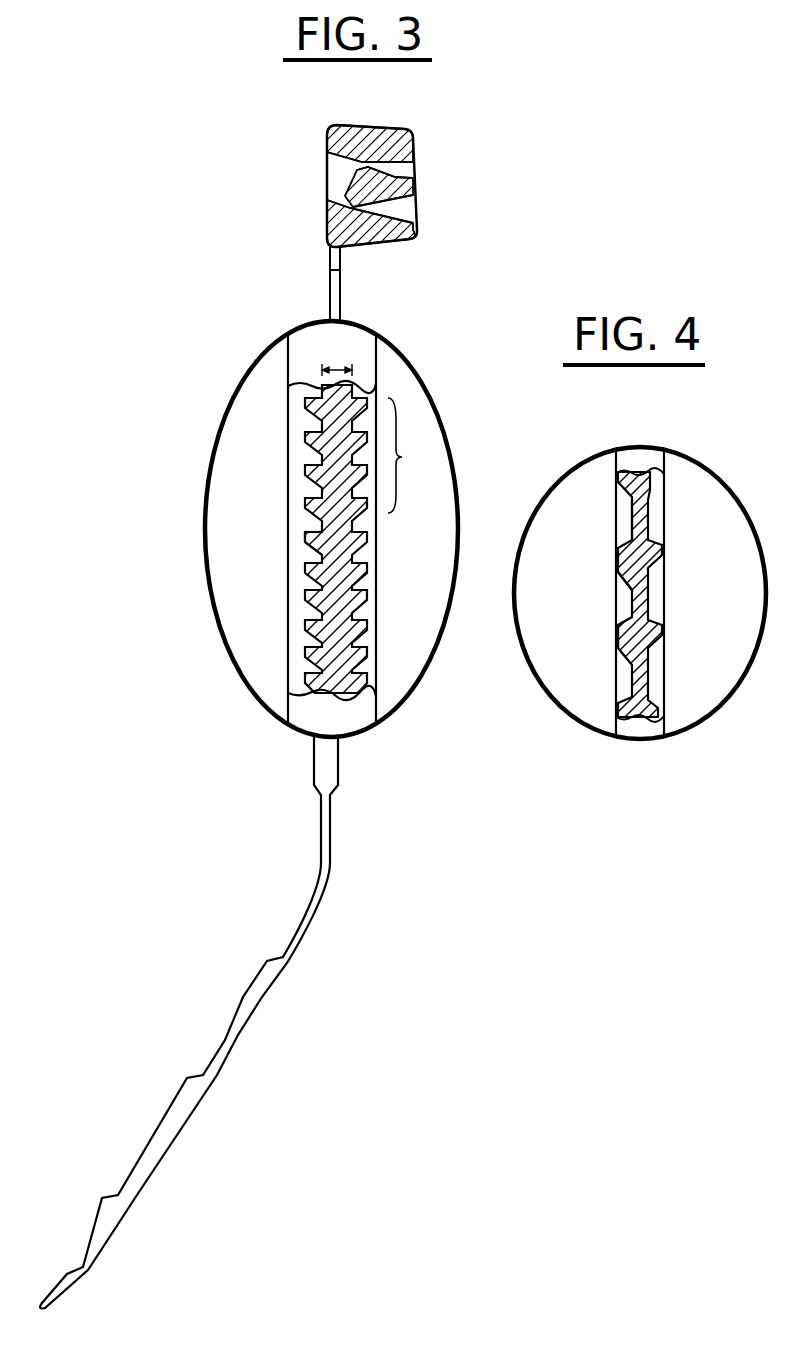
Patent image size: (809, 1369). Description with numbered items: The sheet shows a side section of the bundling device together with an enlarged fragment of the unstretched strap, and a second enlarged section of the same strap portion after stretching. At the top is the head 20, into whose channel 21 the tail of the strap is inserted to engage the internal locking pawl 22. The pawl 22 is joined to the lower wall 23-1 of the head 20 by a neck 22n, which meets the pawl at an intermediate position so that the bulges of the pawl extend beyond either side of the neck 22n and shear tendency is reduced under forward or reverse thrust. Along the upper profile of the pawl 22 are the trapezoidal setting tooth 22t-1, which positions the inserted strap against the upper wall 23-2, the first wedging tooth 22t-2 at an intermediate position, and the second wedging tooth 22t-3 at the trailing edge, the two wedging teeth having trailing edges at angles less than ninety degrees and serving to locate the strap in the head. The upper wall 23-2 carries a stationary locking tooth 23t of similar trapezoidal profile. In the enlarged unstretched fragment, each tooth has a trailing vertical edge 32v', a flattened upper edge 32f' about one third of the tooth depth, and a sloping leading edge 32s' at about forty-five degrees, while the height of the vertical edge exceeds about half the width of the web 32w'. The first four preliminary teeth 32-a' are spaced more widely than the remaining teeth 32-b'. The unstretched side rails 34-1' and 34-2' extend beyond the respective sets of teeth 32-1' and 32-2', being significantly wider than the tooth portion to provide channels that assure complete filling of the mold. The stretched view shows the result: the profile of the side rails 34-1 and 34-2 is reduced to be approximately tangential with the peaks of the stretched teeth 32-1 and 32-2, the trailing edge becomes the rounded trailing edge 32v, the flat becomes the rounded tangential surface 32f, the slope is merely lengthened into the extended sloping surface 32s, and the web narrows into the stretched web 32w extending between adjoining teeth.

In FIG. 3, the head 20 is at (383, 250).
In FIG. 3, the channel 21 is at (335, 175).
In FIG. 3, the pawl 22 is at (355, 170).
In FIG. 3, the setting tooth 22t-1 is at (368, 168).
In FIG. 3, the first wedging tooth 22t-2 is at (377, 177).
In FIG. 3, the second wedging tooth 22t-3 is at (400, 188).
In FIG. 3, the neck 22n is at (340, 208).
In FIG. 3, the locking tooth 23t is at (362, 160).
In FIG. 3, the lower wall 23-1 is at (415, 227).
In FIG. 3, the upper wall 23-2 is at (402, 142).
In FIG. 3, the web 32w' is at (337, 354).
In FIG. 3, the preliminary unstretched teeth 32-a' is at (417, 455).
In FIG. 3, the remaining teeth 32-b' is at (421, 530).
In FIG. 3, the trailing vertical edge 32v' is at (277, 518).
In FIG. 3, the flattened upper edge 32f' is at (279, 533).
In FIG. 3, the sloping leading edge 32s' is at (274, 554).
In FIG. 3, the set of teeth 32-1' is at (293, 539).
In FIG. 3, the set of teeth 32-2' is at (373, 539).
In FIG. 3, the unstretched side rail 34-1' is at (257, 529).
In FIG. 3, the unstretched side rail 34-2' is at (405, 529).
In FIG. 4, the stretched web 32w is at (676, 517).
In FIG. 4, the rounded tangential surface 32f is at (694, 545).
In FIG. 4, the extended sloping surface 32s is at (598, 580).
In FIG. 4, the rounded trailing edge 32v is at (601, 632).
In FIG. 4, the stretched teeth 32-1 is at (596, 594).
In FIG. 4, the stretched teeth 32-2 is at (675, 594).
In FIG. 4, the side rail 34-1 is at (586, 593).
In FIG. 4, the side rail 34-2 is at (693, 593).